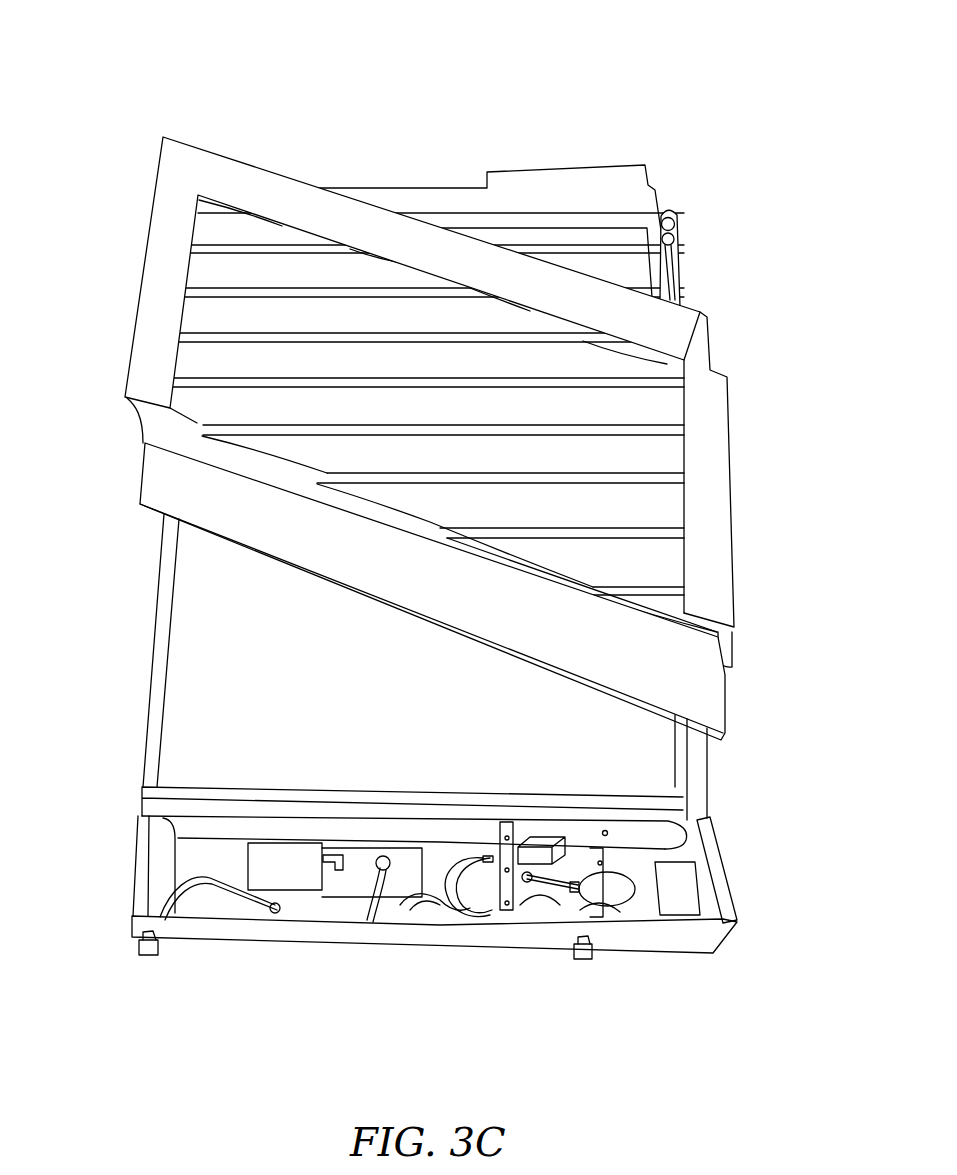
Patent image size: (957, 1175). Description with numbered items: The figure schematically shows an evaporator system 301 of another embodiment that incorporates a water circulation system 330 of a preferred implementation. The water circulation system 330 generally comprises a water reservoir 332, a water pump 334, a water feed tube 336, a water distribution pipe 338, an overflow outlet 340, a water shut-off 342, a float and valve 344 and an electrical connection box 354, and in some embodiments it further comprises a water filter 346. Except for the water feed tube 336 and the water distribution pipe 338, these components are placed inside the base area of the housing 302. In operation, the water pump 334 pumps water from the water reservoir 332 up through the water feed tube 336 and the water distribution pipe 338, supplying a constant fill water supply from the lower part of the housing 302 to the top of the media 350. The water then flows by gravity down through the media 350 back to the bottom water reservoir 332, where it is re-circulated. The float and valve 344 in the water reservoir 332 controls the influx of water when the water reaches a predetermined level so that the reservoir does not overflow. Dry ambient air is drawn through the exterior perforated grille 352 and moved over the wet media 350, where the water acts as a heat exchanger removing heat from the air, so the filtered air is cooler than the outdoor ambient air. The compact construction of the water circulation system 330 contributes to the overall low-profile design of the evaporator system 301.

The evaporator system 301 is at (560, 77).
The housing 302 is at (153, 740).
The water circulation system 330 is at (763, 862).
The water reservoir 332 is at (667, 817).
The water pump 334 is at (687, 903).
The water feed tube 336 is at (673, 280).
The water distribution pipe 338 is at (673, 210).
The overflow outlet 340 is at (584, 962).
The water shut-off 342 is at (145, 941).
The float and valve 344 is at (712, 905).
The water filter 346 is at (340, 915).
The media 350 is at (198, 643).
The exterior perforated grille 352 is at (180, 236).
The electrical connection box 354 is at (263, 857).